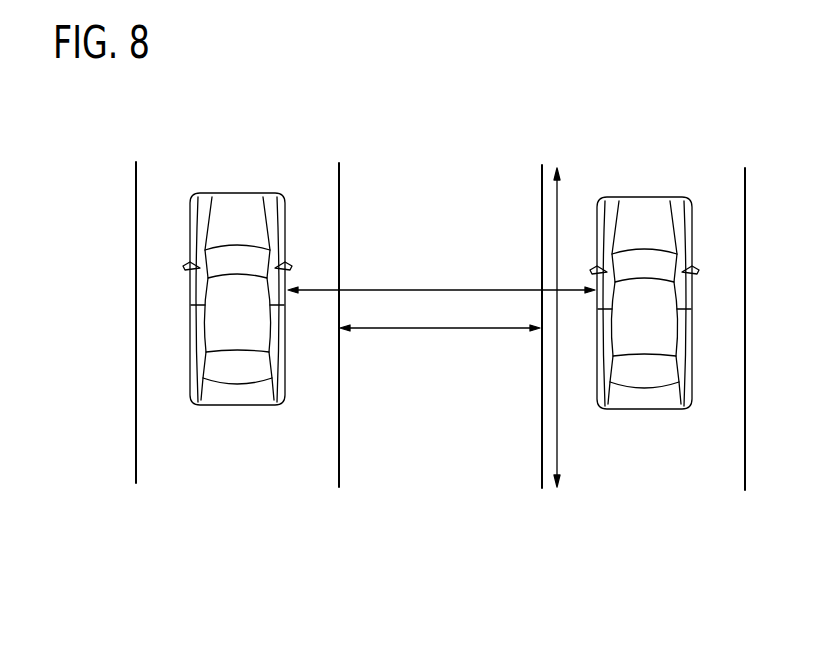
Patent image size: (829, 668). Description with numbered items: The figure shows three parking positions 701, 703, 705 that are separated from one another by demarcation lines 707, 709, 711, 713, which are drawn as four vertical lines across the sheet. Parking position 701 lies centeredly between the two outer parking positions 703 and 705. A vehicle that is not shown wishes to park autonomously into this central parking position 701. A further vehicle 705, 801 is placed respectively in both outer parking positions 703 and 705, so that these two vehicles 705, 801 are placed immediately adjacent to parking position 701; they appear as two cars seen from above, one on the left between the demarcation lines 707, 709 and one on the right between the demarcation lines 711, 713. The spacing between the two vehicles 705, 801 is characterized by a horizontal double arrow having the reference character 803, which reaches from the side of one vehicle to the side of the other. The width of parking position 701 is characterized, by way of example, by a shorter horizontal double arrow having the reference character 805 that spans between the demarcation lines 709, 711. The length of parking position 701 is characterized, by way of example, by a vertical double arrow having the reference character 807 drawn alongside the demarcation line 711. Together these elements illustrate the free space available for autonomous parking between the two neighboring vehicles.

The parking position 701 is at (405, 462).
The parking position 703 is at (203, 460).
The parking position 705 is at (238, 192).
The demarcation line 707 is at (136, 440).
The demarcation line 709 is at (339, 470).
The demarcation line 711 is at (542, 470).
The demarcation line 713 is at (745, 472).
The further vehicle 801 is at (640, 198).
The double arrow 803 is at (395, 289).
The double arrow 805 is at (442, 333).
The double arrow 807 is at (559, 211).